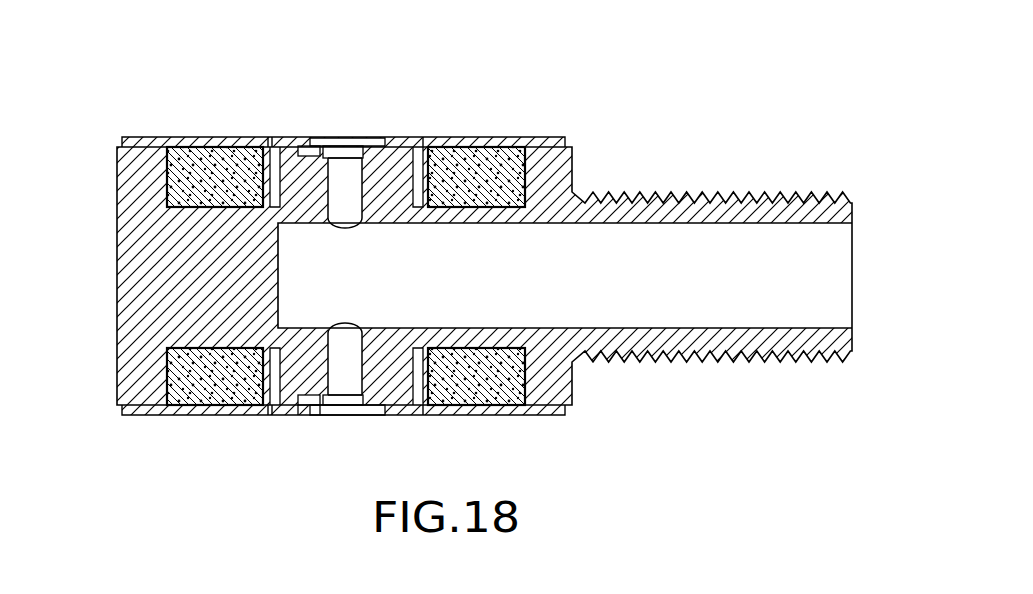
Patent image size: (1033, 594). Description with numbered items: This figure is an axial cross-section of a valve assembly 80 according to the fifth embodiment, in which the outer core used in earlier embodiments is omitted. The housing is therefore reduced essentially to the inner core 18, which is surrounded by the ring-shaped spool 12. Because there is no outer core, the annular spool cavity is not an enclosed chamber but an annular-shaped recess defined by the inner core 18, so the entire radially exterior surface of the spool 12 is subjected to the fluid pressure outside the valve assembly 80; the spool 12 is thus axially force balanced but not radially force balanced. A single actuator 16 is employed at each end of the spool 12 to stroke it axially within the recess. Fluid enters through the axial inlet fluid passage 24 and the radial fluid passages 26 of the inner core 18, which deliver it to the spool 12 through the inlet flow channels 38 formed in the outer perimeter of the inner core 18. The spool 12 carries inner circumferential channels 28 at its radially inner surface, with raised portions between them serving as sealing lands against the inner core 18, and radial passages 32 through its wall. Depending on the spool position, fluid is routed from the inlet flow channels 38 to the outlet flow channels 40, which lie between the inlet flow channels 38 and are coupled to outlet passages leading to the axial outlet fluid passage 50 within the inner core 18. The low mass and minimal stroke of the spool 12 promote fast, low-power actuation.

The valve assembly 80 is at (100, 78).
The inner core 18 is at (152, 253).
The spool 12 is at (418, 137).
The actuator 16 is at (210, 142).
The axial outlet fluid passage 50 is at (345, 228).
The outlet flow channel 40 is at (330, 158).
The axial inlet fluid passage 24 is at (372, 101).
The radial fluid passage 26 is at (417, 101).
The inner circumferential channel 28 is at (370, 158).
The inlet flow channel 38 is at (306, 146).
The radial passage 32 is at (307, 416).